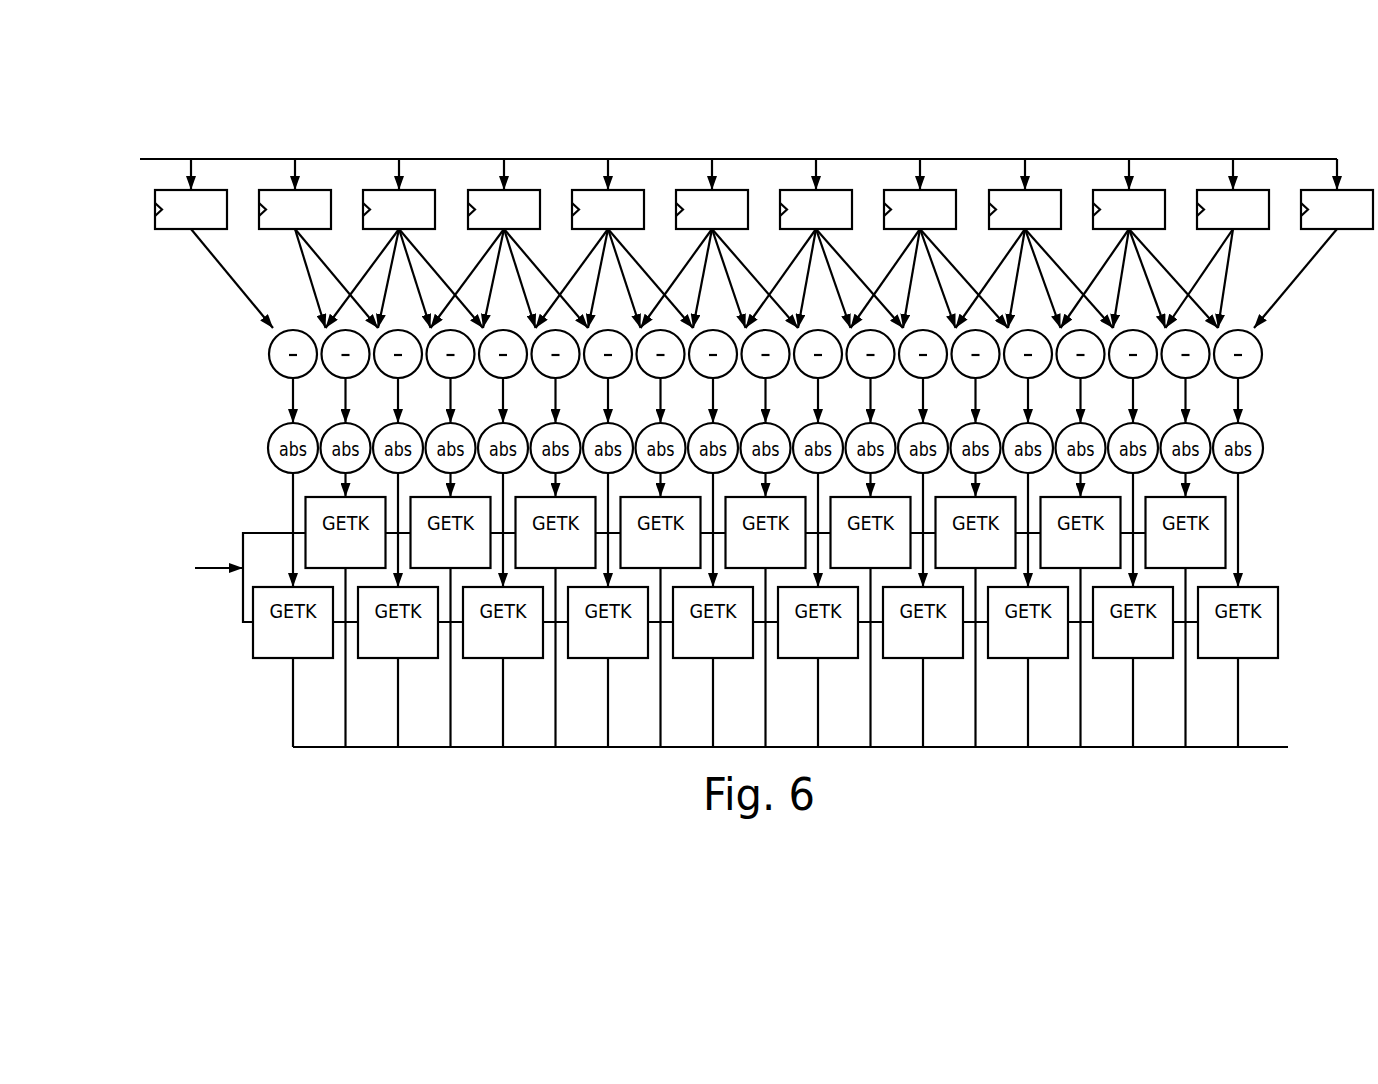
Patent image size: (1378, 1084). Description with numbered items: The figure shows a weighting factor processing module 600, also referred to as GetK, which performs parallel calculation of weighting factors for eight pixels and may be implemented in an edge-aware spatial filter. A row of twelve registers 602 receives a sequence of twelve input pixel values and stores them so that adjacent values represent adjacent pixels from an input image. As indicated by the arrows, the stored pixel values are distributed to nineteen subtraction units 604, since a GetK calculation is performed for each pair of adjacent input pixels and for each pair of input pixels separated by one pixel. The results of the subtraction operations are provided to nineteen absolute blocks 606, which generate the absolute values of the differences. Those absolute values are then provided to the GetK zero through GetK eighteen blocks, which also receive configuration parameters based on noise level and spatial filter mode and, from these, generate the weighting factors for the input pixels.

The weighting factor processing module 600 is at (1160, 60).
The registers 602 is at (208, 190).
The subtraction units 604 is at (266, 354).
The absolute blocks 606 is at (265, 449).